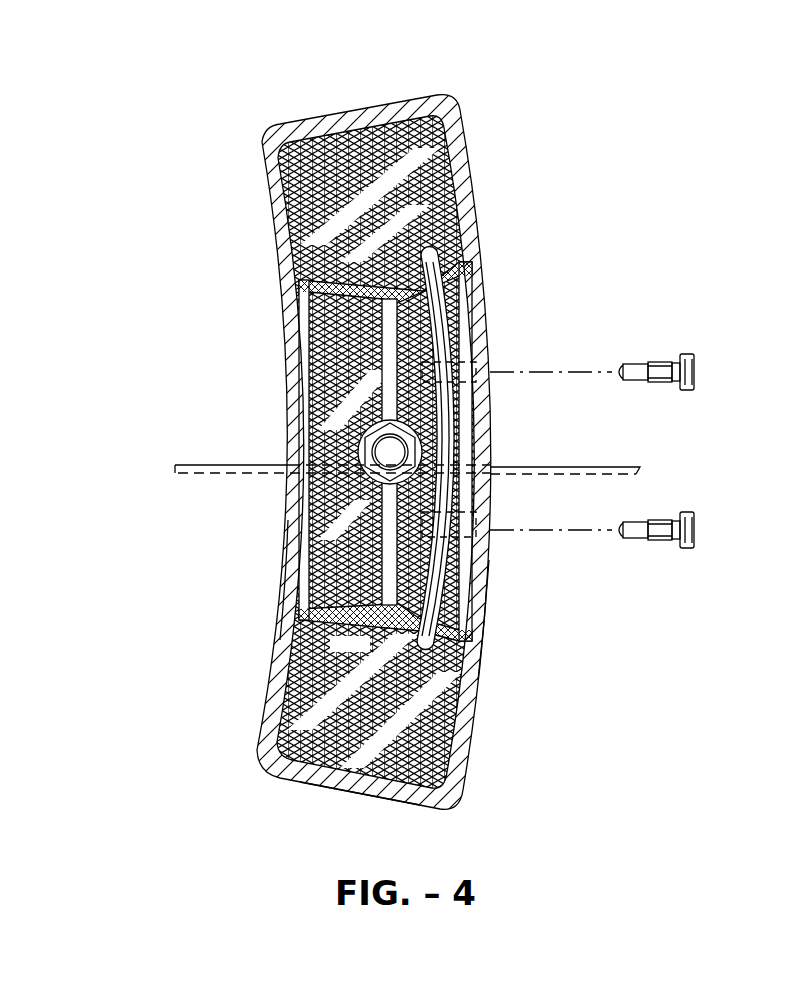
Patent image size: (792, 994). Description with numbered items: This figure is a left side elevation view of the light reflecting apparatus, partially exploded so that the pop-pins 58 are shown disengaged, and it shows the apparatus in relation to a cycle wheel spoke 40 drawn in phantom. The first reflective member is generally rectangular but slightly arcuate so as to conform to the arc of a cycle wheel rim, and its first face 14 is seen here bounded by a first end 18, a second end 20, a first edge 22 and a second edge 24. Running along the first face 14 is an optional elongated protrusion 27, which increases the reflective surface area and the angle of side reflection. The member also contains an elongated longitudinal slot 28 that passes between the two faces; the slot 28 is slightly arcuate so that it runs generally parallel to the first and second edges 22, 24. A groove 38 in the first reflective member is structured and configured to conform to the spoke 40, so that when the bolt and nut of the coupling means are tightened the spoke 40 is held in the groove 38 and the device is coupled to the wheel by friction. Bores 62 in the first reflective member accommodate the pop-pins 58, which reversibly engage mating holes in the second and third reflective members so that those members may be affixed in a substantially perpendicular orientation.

The first face 14 is at (410, 150).
The first end 18 is at (365, 103).
The second end 20 is at (313, 793).
The first edge 22 is at (485, 612).
The second edge 24 is at (285, 588).
The elongated protrusion 27 is at (393, 340).
The elongated longitudinal slot 28 is at (437, 246).
The groove 38 is at (290, 507).
The cycle wheel spoke 40 is at (547, 463).
The pop-pins 58 is at (731, 514).
The bores 62 is at (521, 503).